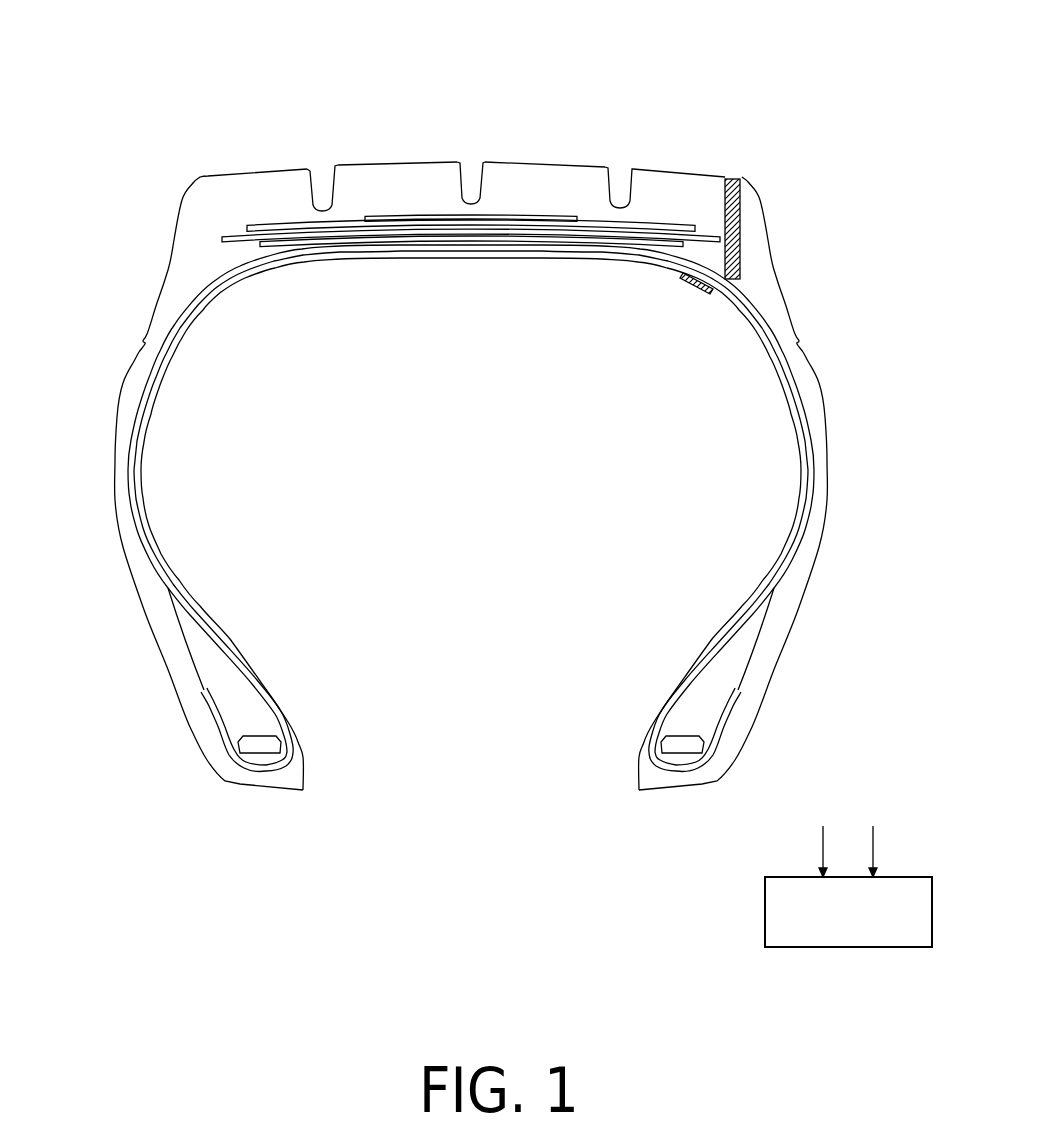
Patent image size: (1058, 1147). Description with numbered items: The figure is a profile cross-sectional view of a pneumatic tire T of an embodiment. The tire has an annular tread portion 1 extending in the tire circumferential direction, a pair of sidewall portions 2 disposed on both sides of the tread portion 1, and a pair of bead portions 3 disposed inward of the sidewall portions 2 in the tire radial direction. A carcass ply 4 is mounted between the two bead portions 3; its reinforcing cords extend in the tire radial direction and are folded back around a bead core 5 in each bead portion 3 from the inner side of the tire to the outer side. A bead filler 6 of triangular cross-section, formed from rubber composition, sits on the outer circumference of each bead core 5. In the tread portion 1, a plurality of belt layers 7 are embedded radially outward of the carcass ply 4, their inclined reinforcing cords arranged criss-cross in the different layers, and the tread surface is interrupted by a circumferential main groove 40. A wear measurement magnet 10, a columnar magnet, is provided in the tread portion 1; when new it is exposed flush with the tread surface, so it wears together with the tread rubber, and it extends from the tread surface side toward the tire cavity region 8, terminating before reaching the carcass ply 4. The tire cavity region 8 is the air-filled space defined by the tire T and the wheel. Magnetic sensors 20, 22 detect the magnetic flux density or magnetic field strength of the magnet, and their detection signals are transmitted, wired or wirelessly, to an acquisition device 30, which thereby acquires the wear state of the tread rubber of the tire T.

The pneumatic tire T is at (690, 102).
The tread portion 1 is at (535, 157).
The sidewall portions 2 is at (132, 363).
The bead portions 3 is at (187, 738).
The carcass ply 4 is at (763, 310).
The bead core 5 is at (263, 745).
The bead filler 6 is at (227, 677).
The belt layers 7 is at (355, 222).
The tire cavity region 8 is at (590, 436).
The wear measurement magnet 10 is at (736, 177).
The magnetic sensor 20 is at (690, 289).
The magnetic sensor 22 is at (873, 838).
The acquisition device 30 is at (836, 949).
The circumferential main groove 40 is at (325, 172).